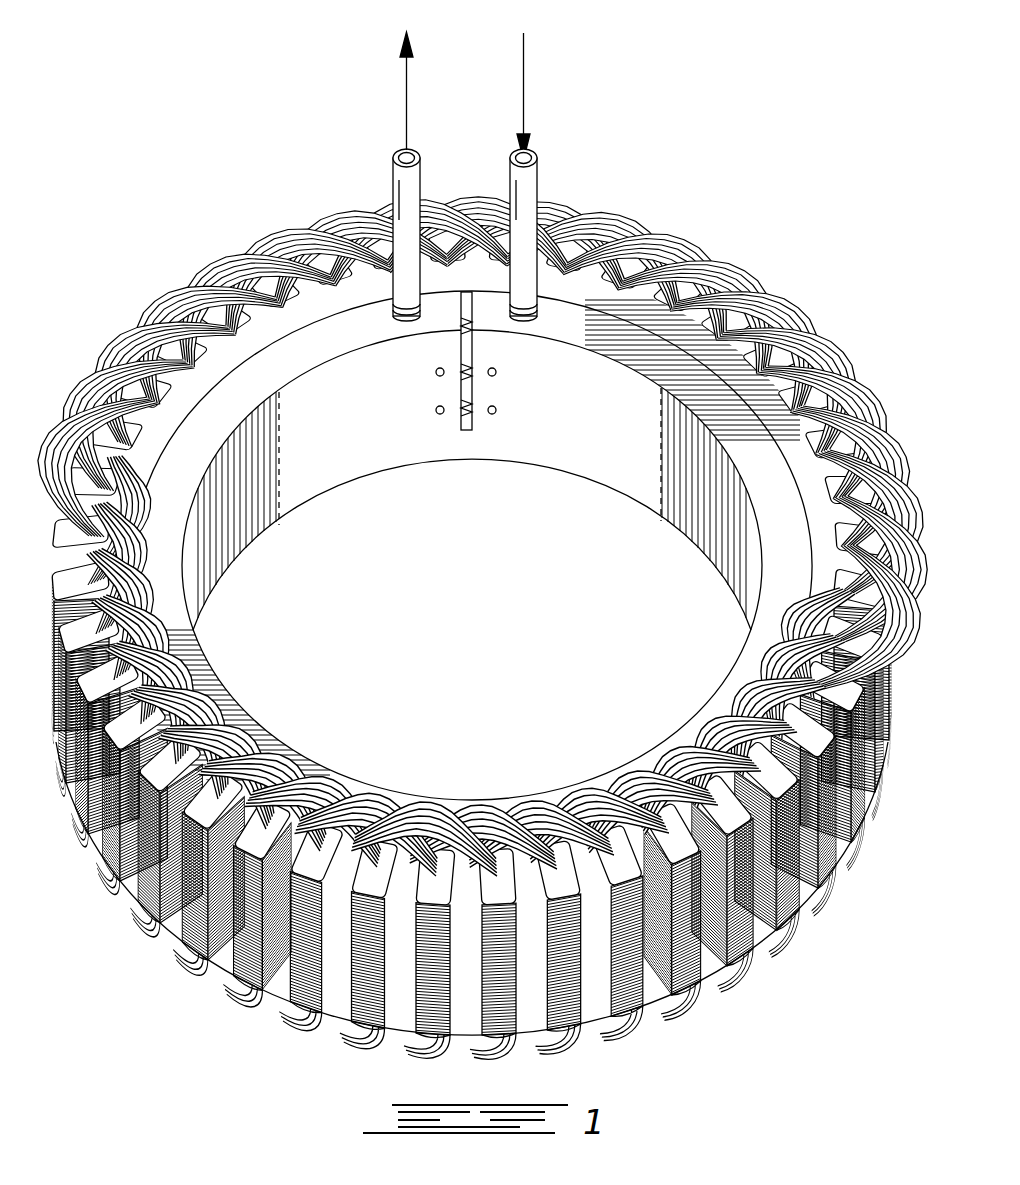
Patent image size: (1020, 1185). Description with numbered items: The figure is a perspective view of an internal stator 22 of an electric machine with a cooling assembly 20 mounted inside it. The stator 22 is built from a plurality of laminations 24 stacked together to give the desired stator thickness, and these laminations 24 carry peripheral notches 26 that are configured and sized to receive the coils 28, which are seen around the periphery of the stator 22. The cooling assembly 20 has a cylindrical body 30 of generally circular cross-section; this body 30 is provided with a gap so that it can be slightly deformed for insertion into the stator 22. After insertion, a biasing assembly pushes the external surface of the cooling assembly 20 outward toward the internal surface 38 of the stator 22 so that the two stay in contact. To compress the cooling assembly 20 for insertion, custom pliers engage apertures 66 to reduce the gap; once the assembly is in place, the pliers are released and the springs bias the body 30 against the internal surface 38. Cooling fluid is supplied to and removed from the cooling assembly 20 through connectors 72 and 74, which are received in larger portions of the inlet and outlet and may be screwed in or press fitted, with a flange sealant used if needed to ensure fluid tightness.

The cooling assembly 20 is at (490, 546).
The internal stator 22 is at (490, 538).
The laminations 24 is at (899, 752).
The peripheral notches 26 is at (806, 434).
The coils 28 is at (863, 449).
The cylindrical body 30 is at (658, 415).
The internal surface 38 is at (203, 370).
The apertures 66 is at (492, 416).
The connector 72 is at (527, 182).
The connector 74 is at (412, 180).